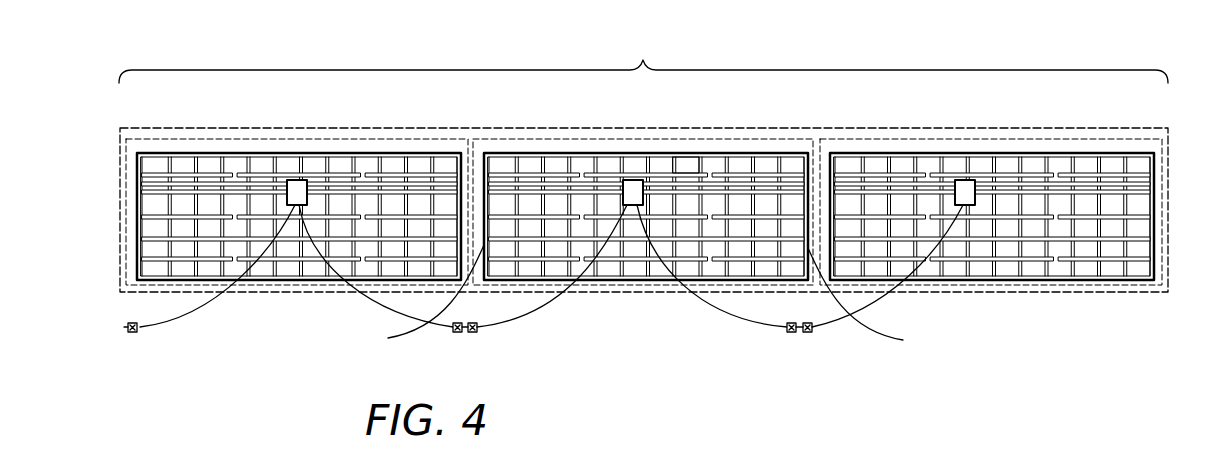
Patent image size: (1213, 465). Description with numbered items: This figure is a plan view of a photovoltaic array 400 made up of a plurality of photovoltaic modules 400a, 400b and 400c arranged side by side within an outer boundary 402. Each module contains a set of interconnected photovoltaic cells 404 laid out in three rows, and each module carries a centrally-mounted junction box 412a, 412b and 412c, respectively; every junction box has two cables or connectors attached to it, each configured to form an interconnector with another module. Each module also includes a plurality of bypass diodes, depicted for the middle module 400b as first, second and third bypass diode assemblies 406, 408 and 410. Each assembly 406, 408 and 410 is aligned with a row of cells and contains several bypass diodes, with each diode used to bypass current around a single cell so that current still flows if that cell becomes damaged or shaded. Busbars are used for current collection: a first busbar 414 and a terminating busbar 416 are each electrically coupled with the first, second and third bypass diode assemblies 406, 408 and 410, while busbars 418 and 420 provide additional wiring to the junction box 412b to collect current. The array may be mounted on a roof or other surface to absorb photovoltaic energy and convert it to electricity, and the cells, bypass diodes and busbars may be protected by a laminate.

The photovoltaic array 400 is at (643, 60).
The frame / enclosure 402 is at (1137, 132).
The photovoltaic module 400a is at (160, 143).
The photovoltaic module 400b is at (507, 145).
The photovoltaic module 400c is at (853, 143).
The photovoltaic cells 404 is at (685, 163).
The first bypass diode assembly 406 is at (547, 170).
The second bypass diode assembly 408 is at (577, 219).
The third bypass diode assembly 410 is at (760, 260).
The junction box 412a is at (300, 197).
The junction box 412b is at (632, 192).
The junction box 412c is at (990, 195).
The first busbar 414 is at (418, 299).
The terminating busbar 416 is at (875, 301).
The busbar 418 is at (615, 177).
The busbar 420 is at (762, 177).